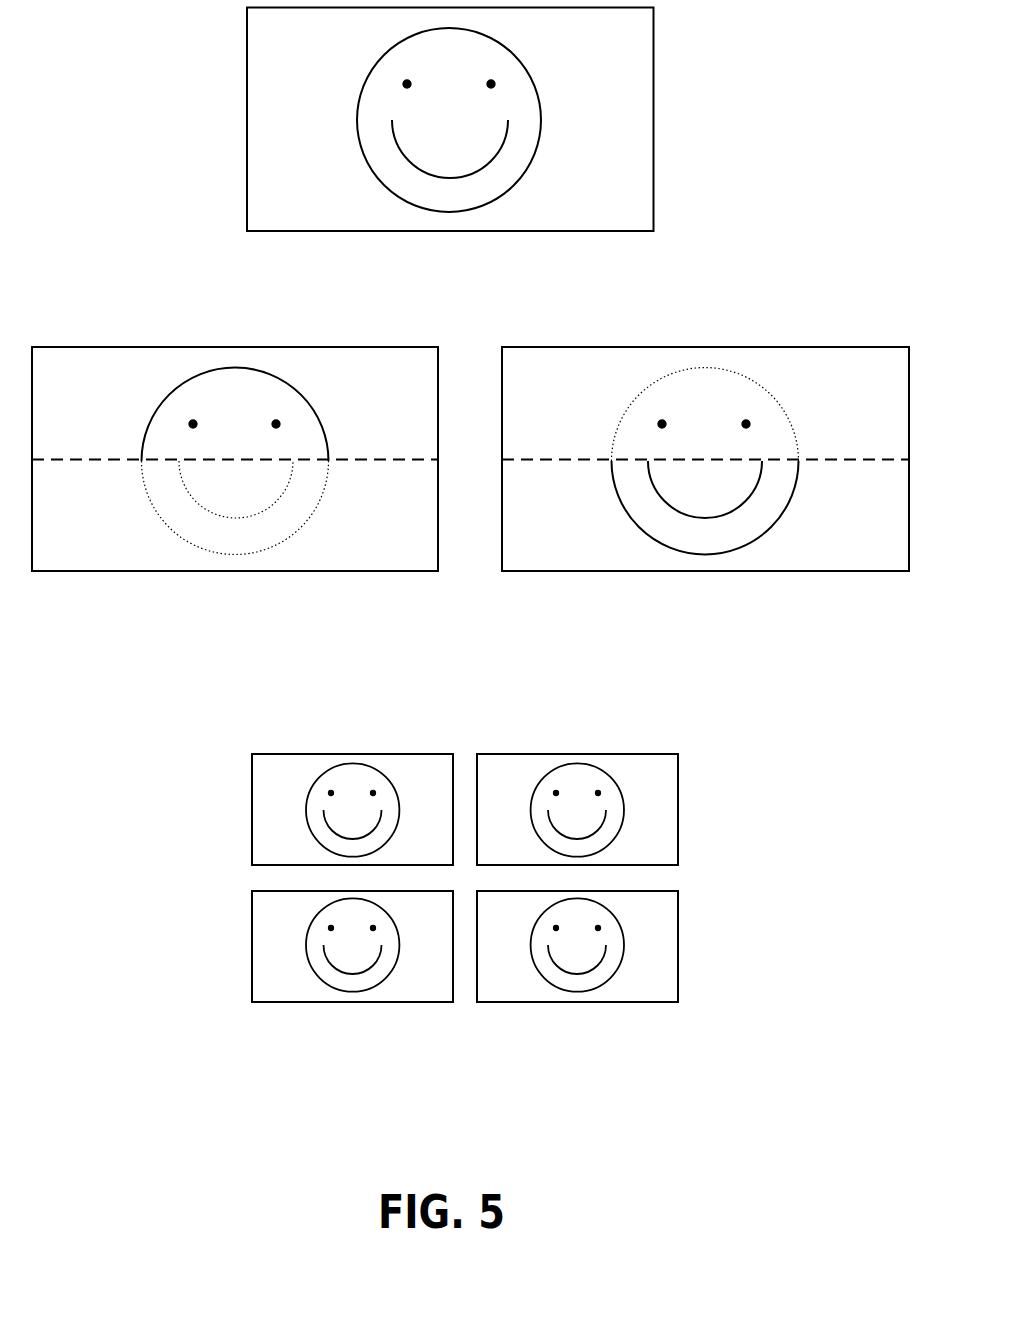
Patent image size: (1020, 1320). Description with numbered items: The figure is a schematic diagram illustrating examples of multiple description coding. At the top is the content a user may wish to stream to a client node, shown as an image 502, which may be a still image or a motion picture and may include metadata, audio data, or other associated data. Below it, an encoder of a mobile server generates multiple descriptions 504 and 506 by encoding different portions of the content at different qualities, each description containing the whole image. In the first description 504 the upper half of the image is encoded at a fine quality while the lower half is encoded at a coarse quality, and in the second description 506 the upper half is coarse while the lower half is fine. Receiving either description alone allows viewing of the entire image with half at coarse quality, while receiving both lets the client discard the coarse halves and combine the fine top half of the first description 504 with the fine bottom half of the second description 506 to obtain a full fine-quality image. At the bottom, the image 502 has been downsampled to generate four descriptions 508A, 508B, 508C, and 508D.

The image 502 is at (247, 31).
The first description 504 is at (88, 345).
The second description 506 is at (538, 345).
The description 508A is at (300, 739).
The description 508B is at (525, 739).
The description 508C is at (318, 1002).
The description 508D is at (527, 1002).